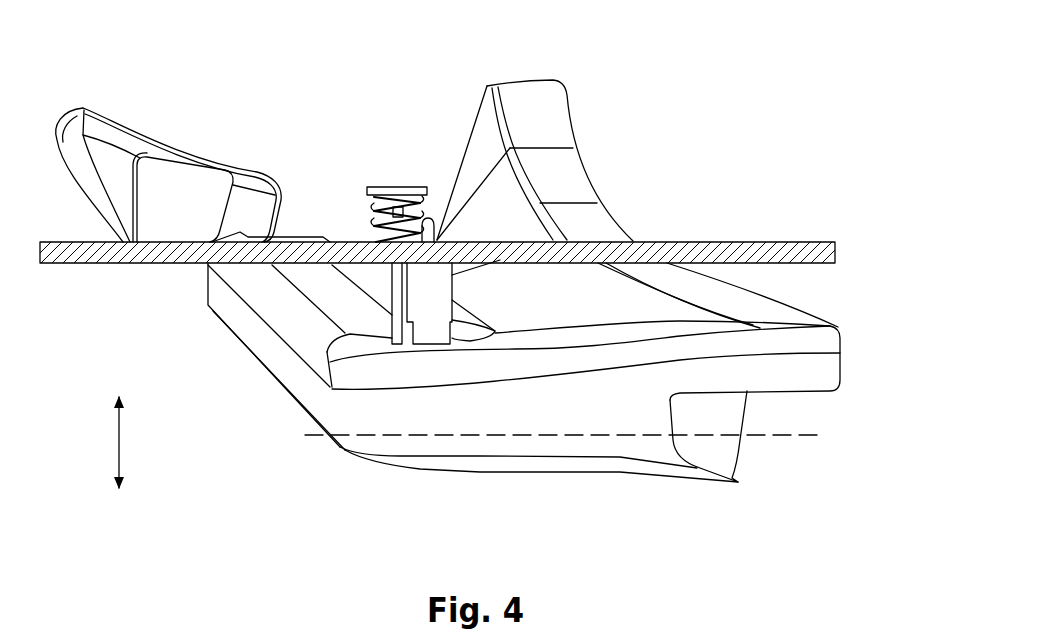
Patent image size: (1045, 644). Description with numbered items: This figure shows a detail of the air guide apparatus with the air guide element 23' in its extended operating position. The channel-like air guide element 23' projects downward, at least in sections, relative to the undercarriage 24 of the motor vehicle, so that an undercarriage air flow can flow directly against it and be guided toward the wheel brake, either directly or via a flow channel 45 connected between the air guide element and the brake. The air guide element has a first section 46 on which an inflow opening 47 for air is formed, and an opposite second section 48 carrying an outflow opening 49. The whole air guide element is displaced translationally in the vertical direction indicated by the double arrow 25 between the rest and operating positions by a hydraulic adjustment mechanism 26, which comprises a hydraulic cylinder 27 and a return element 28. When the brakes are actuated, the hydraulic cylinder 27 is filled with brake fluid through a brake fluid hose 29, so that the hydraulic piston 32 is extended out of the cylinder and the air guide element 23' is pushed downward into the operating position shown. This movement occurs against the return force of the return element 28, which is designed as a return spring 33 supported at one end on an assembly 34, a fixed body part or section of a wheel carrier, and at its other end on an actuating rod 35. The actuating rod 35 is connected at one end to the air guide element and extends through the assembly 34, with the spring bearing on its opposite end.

The air guide element in operating position 23' is at (571, 157).
The undercarriage 24 is at (507, 440).
The double arrow 25 is at (118, 438).
The hydraulic adjustment mechanism 26 is at (392, 148).
The hydraulic cylinder 27 is at (483, 318).
The return element 28 is at (368, 222).
The brake fluid hose 29 is at (462, 303).
The hydraulic piston 32 is at (430, 332).
The return spring 33 is at (437, 238).
The assembly 34 is at (775, 243).
The actuating rod 35 is at (390, 283).
The flow channel 45 is at (150, 108).
The first section 46 is at (846, 352).
The inflow opening 47 is at (754, 418).
The second section 48 is at (205, 312).
The outflow opening 49 is at (290, 217).